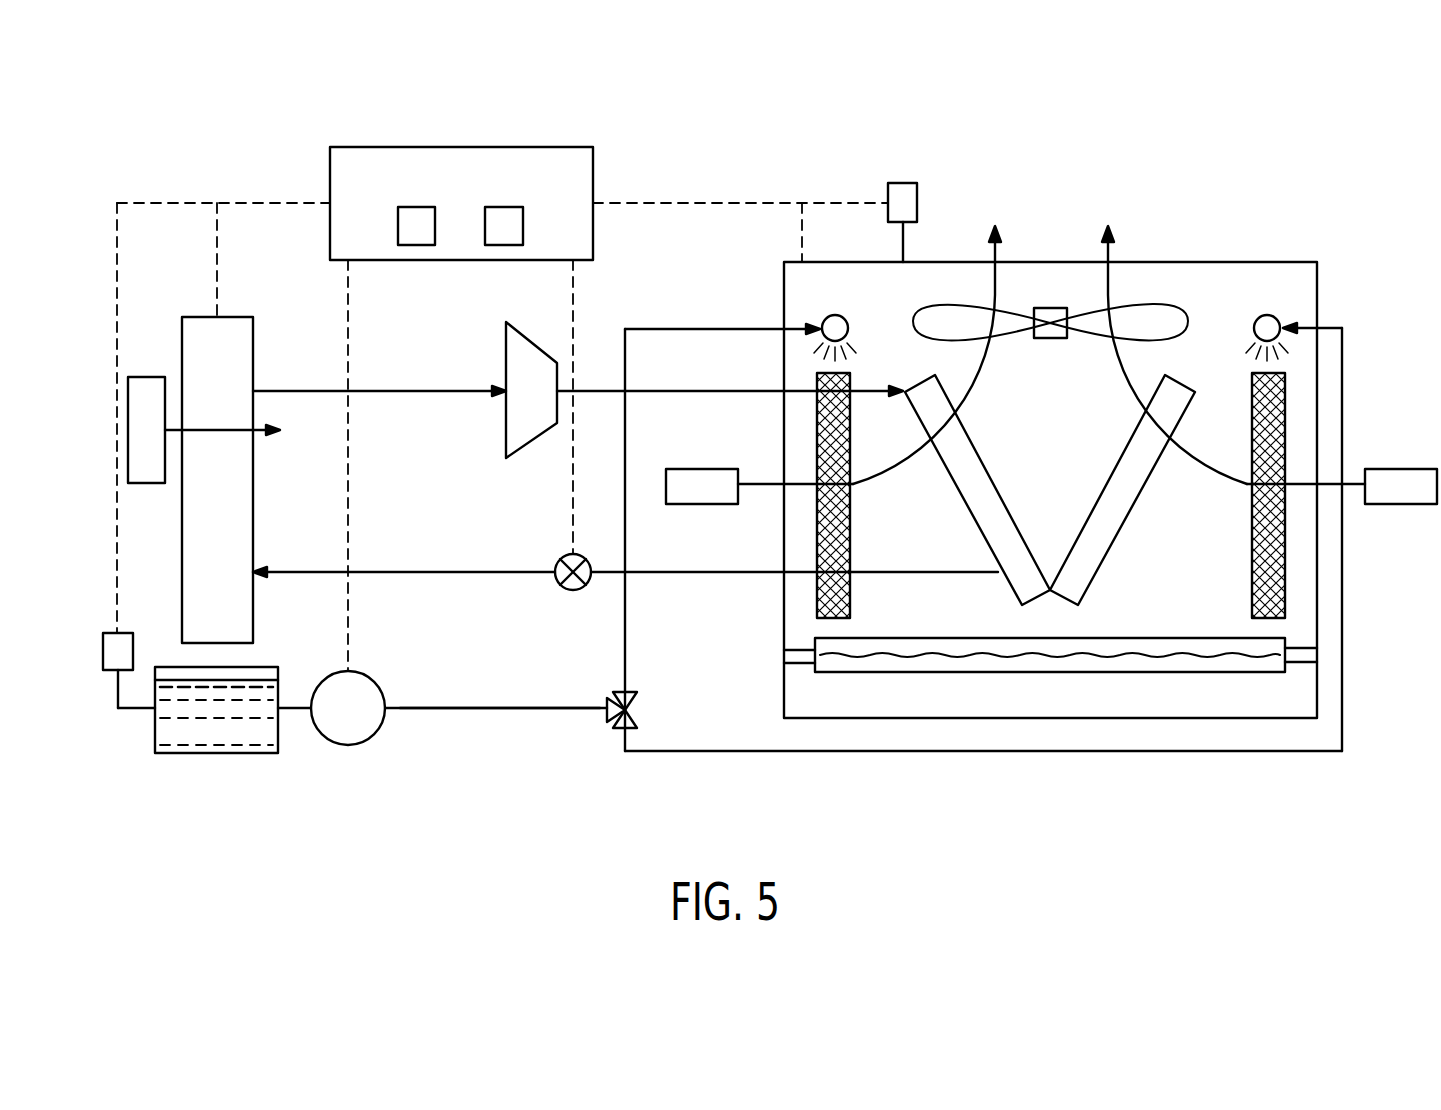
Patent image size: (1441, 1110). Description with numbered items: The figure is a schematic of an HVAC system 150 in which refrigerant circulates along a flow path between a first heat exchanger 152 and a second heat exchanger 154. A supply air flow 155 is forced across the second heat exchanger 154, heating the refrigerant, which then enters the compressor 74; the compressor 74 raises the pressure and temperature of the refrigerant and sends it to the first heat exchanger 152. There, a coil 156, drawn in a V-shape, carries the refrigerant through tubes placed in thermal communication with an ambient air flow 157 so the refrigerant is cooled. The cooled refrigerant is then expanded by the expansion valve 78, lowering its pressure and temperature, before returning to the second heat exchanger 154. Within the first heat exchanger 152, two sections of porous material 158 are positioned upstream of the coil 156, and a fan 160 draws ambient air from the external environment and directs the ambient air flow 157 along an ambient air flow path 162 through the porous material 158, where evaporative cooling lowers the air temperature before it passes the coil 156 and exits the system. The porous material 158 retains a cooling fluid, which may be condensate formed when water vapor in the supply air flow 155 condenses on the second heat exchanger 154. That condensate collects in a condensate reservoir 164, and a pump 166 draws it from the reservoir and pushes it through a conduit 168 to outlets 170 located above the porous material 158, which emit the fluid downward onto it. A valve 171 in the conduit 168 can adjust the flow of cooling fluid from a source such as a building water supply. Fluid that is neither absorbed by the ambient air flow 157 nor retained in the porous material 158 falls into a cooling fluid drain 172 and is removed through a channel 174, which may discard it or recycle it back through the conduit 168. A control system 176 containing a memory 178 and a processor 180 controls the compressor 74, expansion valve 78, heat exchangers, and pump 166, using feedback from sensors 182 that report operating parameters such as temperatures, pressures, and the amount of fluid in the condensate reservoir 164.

The HVAC system 150 is at (1294, 144).
The first heat exchanger 152 is at (1290, 262).
The second heat exchanger 154 is at (197, 317).
The supply air flow 155 is at (147, 377).
The coil 156 is at (1139, 498).
The ambient air flow 157 is at (700, 469).
The porous material 158 is at (815, 432).
The fan 160 is at (958, 302).
The ambient air flow path 162 is at (760, 488).
The condensate reservoir 164 is at (168, 732).
The pump 166 is at (345, 745).
The conduit 168 is at (498, 712).
The outlets 170 is at (832, 316).
The valve 171 is at (637, 710).
The cooling fluid drain 172 is at (1050, 638).
The channel 174 is at (801, 648).
The control system 176 is at (460, 147).
The memory 178 is at (416, 245).
The processor 180 is at (500, 245).
The sensors 182 is at (103, 648).
The compressor 74 is at (532, 338).
The expansion valve 78 is at (574, 592).